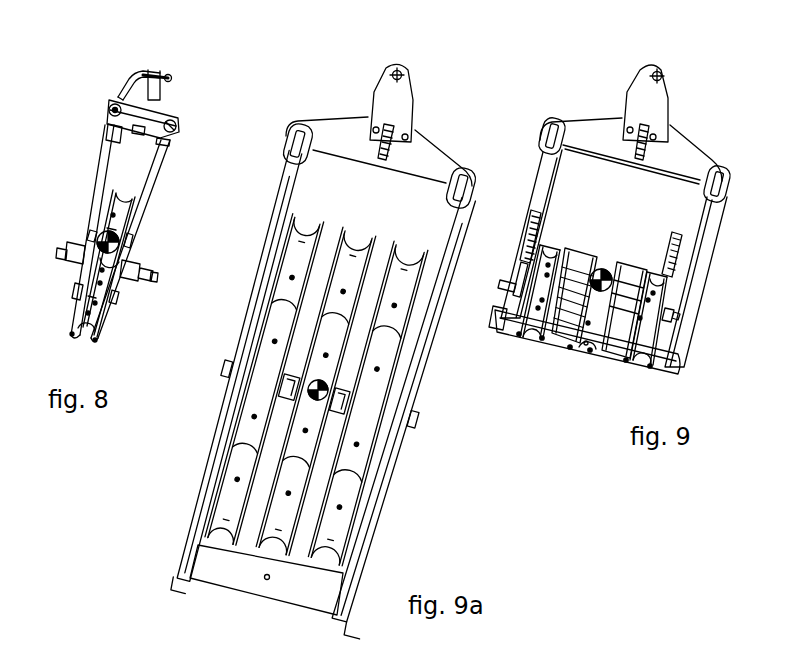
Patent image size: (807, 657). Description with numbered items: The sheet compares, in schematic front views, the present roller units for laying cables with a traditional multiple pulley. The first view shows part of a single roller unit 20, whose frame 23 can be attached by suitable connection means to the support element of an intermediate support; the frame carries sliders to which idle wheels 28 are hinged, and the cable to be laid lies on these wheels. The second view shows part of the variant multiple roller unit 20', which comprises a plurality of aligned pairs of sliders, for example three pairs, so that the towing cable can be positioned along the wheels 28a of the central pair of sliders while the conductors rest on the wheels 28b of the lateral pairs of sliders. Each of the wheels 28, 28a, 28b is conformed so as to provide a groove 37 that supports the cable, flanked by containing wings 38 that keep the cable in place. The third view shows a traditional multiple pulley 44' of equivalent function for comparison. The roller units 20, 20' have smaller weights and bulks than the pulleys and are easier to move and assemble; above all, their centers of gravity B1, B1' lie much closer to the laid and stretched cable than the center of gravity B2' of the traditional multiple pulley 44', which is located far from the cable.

In FIG. 8, the roller unit 20 is at (117, 174).
In FIG. 9, the roller unit 20' is at (613, 190).
In FIG. 9, the frame 23 is at (522, 207).
In FIG. 8, the wheels 28 is at (110, 182).
In FIG. 9, the wheels 28a is at (609, 256).
In FIG. 9, the wheels 28b is at (555, 238).
In FIG. 8, the groove 37 is at (98, 306).
In FIG. 9, the groove 37 is at (543, 302).
In FIG. 8, the containing wings 38 is at (95, 345).
In FIG. 9, the containing wings 38 is at (542, 340).
In FIG. 9A, the multiple pulley 44' is at (320, 352).
In FIG. 8, the center of gravity B1 is at (144, 234).
In FIG. 9, the center of gravity B1' is at (534, 263).
In FIG. 9A, the center of gravity B2' is at (395, 385).